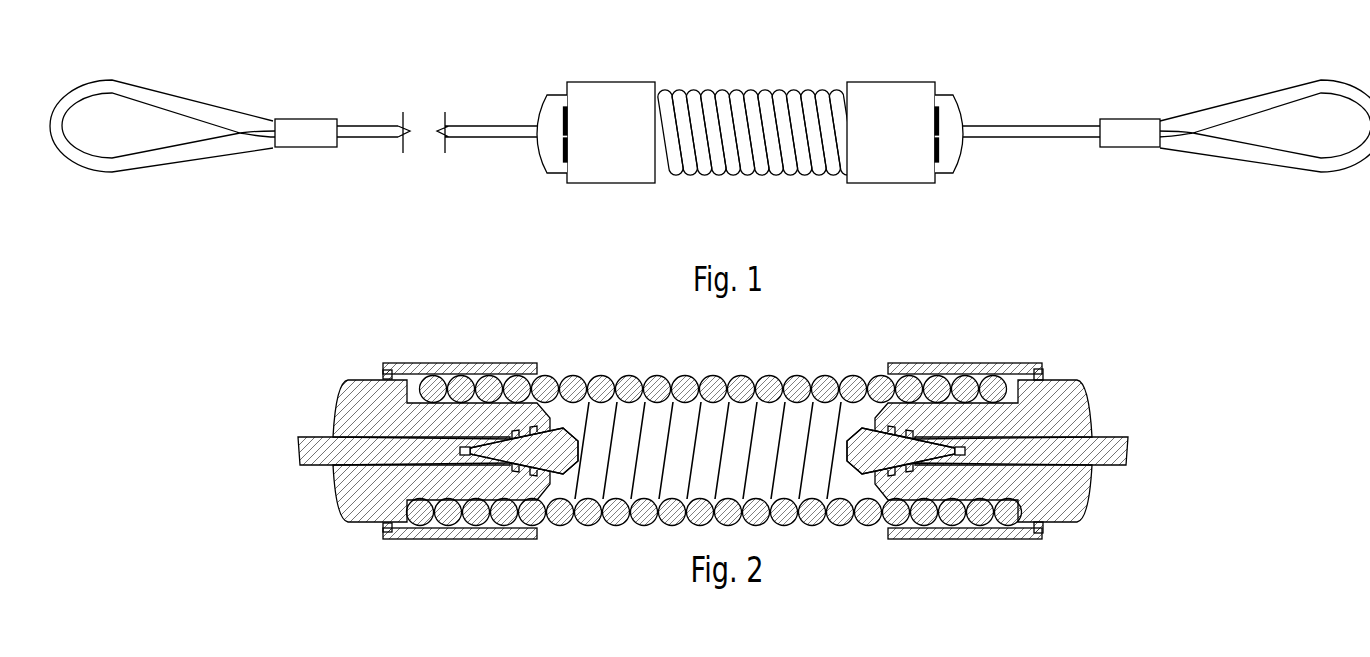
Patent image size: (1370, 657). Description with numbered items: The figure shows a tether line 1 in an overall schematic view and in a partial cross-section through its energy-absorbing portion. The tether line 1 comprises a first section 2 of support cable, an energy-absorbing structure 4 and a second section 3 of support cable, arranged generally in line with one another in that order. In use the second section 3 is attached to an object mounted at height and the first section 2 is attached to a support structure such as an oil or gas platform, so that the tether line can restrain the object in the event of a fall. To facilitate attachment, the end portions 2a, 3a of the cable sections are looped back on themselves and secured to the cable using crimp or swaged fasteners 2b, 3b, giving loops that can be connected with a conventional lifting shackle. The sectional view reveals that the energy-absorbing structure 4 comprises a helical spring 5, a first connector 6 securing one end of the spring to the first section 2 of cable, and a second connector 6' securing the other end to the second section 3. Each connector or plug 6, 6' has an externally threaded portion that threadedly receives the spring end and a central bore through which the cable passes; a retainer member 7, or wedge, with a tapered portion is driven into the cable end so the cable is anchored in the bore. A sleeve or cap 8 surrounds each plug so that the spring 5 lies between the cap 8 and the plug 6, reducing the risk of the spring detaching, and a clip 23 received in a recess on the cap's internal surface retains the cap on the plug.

In FIG. 1, the tether line 1 is at (788, 60).
In FIG. 1, the first section of support cable 2 is at (1065, 124).
In FIG. 2, the first section of support cable 2 is at (1125, 435).
In FIG. 1, the end portion of first section of support cable 2a is at (1323, 80).
In FIG. 1, the crimp or swaged fastener 2b is at (1137, 117).
In FIG. 1, the second section of support cable 3 is at (480, 108).
In FIG. 2, the second section of support cable 3 is at (312, 428).
In FIG. 1, the end portion of second section of support cable 3a is at (220, 112).
In FIG. 1, the crimp or swaged fastener 3b is at (310, 114).
In FIG. 1, the energy-absorbing structure 4 is at (722, 197).
In FIG. 2, the helical spring 5 is at (562, 527).
In FIG. 2, the first connector 6 is at (1022, 469).
In FIG. 2, the second connector 6' is at (405, 479).
In FIG. 2, the retainer member 7 is at (560, 450).
In FIG. 2, the sleeve or cap 8 is at (440, 539).
In FIG. 2, the clip 23 is at (1042, 536).